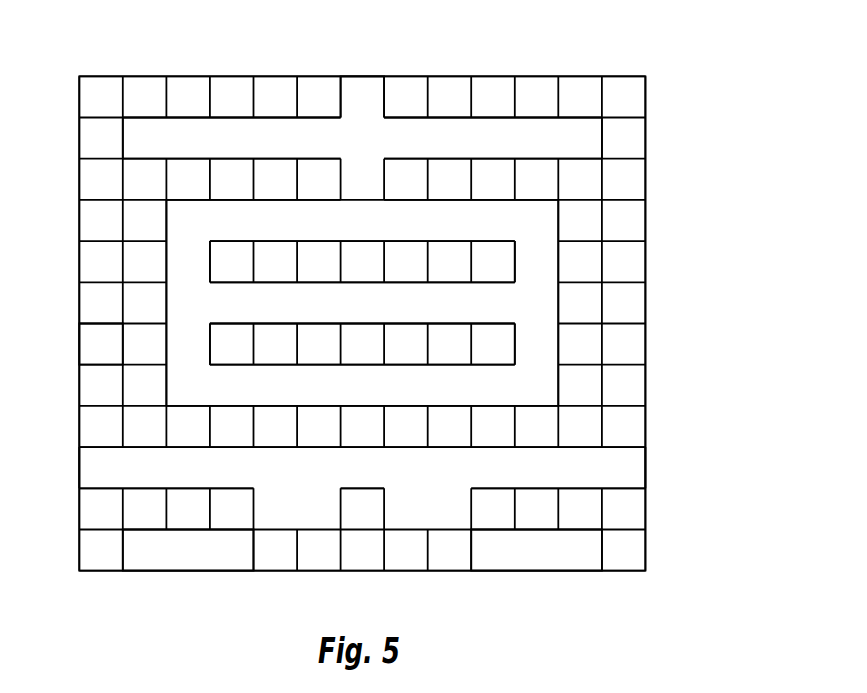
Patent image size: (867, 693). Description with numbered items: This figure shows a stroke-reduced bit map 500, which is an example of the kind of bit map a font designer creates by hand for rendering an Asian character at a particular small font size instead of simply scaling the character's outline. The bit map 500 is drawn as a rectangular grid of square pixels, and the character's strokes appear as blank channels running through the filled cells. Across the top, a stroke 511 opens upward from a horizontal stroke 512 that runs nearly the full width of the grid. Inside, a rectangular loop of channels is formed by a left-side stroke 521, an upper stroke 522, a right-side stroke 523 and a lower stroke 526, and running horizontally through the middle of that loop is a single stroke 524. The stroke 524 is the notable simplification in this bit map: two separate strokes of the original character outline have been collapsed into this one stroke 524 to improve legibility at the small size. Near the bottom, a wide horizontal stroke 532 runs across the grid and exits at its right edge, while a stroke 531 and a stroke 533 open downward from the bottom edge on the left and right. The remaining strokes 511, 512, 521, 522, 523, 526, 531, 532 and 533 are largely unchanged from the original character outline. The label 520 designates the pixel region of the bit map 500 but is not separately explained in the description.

The stroke-reduced bit map 500 is at (578, 49).
The stroke 511 is at (366, 76).
The stroke 512 is at (602, 128).
The substrate pillar array 520 is at (107, 349).
The stroke 521 is at (166, 272).
The stroke 522 is at (494, 200).
The stroke 523 is at (558, 270).
The single stroke 524 is at (408, 283).
The stroke 526 is at (494, 406).
The stroke 531 is at (187, 571).
The stroke 532 is at (645, 467).
The stroke 533 is at (535, 571).